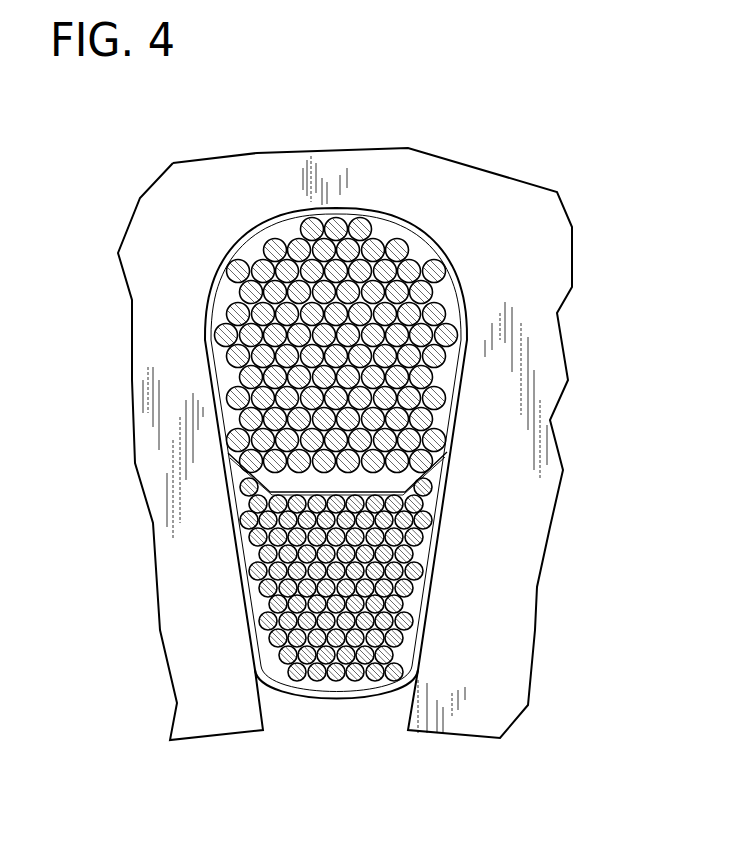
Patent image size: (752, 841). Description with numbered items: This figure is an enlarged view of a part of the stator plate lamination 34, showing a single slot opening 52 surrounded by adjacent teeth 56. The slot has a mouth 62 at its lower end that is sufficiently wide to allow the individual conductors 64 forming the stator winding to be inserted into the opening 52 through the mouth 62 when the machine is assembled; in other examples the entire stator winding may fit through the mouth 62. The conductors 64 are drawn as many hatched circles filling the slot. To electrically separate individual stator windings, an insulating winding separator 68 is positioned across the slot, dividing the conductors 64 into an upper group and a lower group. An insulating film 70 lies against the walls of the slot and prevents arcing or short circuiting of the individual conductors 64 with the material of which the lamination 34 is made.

The stator plate lamination 34 is at (158, 180).
The slot opening 52 is at (437, 546).
The teeth 56 is at (537, 348).
The mouth 62 is at (343, 714).
The conductors 64 is at (440, 305).
The insulating winding separator 68 is at (447, 453).
The insulating film 70 is at (422, 240).